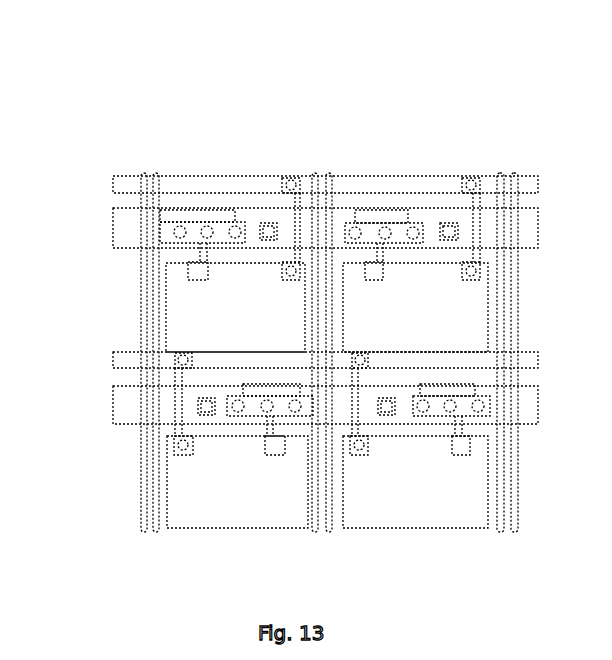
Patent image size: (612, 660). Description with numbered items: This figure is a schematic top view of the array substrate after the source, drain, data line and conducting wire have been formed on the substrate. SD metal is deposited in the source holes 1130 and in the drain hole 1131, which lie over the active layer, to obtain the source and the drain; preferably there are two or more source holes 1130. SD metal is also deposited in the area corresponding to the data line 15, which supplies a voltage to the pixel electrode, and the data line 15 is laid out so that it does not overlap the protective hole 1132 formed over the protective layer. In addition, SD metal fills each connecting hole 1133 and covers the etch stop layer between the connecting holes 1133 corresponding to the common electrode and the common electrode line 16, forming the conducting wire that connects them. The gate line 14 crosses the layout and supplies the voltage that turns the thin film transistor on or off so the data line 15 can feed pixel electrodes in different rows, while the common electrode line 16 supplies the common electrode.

The gate line 14 is at (128, 413).
The data line 15 is at (153, 340).
The common electrode line 16 is at (125, 358).
The source holes 1130 is at (207, 232).
The drain hole 1131 is at (180, 232).
The protective hole 1132 is at (267, 232).
The connecting holes 1133 is at (292, 270).